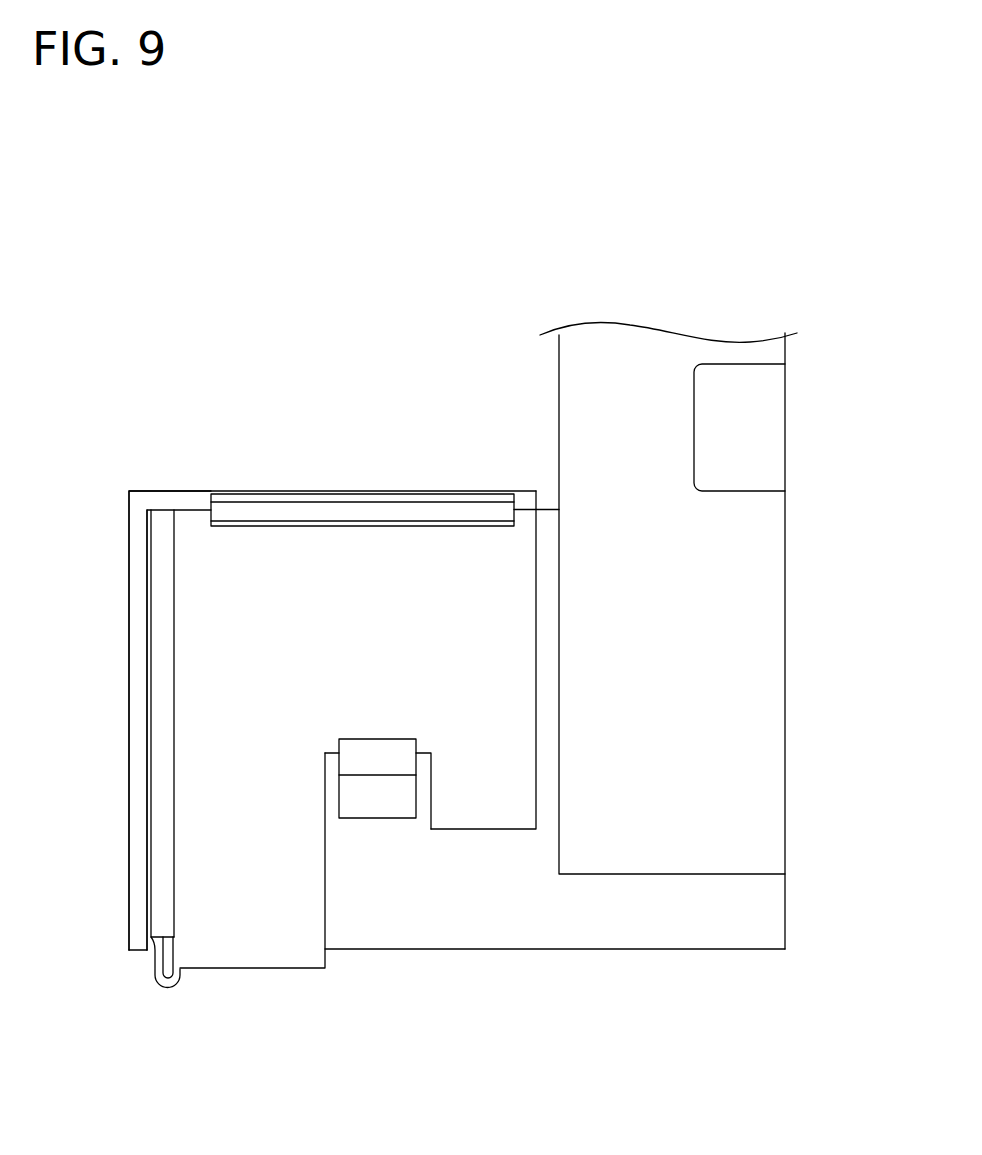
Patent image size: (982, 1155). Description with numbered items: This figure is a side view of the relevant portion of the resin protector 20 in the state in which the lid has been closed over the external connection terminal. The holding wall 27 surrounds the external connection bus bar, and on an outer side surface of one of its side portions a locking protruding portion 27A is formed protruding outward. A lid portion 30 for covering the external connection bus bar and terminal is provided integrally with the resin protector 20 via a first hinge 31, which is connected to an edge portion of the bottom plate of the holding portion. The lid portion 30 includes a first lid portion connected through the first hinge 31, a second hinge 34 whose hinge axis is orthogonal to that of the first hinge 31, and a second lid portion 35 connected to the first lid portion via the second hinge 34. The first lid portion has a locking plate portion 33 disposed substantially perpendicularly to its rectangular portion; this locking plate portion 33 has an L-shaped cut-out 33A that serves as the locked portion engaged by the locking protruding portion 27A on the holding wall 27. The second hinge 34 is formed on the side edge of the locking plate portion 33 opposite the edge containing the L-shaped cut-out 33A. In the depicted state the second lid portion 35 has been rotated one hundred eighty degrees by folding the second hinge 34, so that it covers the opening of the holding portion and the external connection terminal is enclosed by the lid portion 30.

The resin protector 20 is at (581, 290).
The holding wall 27 is at (502, 936).
The locking protruding portion 27A is at (378, 776).
The lid portion 30 is at (228, 962).
The first hinge 31 is at (168, 987).
The locking plate portion 33 is at (282, 962).
The L-shaped cut-out 33A is at (426, 754).
The second hinge 34 is at (362, 505).
The second lid portion 35 is at (184, 490).